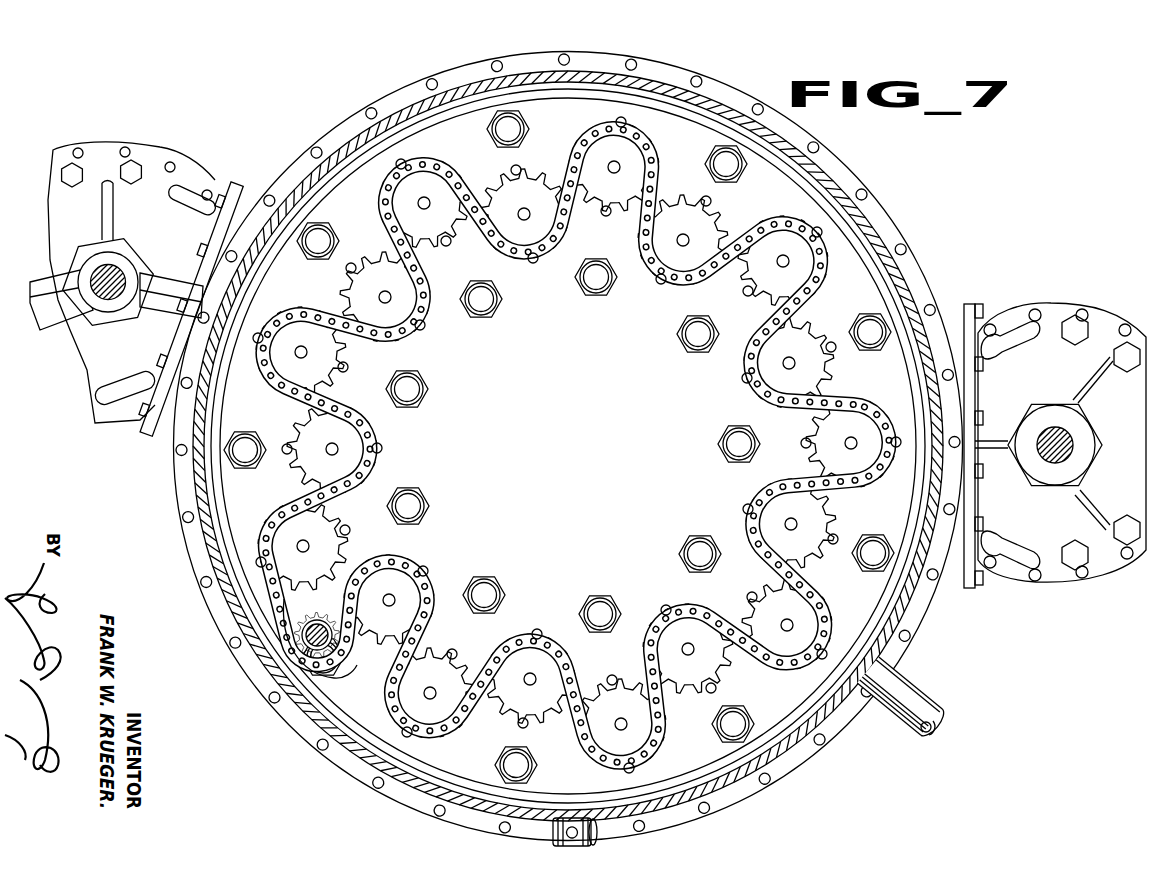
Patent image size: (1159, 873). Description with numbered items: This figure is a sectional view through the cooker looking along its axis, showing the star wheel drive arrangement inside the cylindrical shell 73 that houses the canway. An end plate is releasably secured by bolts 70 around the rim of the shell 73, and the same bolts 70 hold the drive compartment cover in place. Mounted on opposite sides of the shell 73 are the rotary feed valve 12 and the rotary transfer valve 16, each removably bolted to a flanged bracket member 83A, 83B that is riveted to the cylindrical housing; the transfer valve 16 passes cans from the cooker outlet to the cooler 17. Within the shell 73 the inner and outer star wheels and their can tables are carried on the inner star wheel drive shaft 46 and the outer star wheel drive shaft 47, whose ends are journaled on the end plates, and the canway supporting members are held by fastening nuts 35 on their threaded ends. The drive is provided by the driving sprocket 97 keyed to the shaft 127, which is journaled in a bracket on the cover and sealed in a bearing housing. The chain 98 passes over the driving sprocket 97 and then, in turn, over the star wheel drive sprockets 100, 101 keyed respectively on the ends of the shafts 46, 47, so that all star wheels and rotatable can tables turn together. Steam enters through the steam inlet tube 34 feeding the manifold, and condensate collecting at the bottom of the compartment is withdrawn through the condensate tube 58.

The rotary feed valve 12 is at (1028, 305).
The rotary transfer valve 16 is at (148, 120).
The cooler 17 is at (849, 171).
The steam inlet tube 34 is at (924, 700).
The fastening nut 35 is at (595, 295).
The inner star wheel drive shaft 46 is at (392, 591).
The outer star wheel drive shaft 47 is at (302, 539).
The condensate tube 58 is at (597, 830).
The bolts 70 is at (904, 249).
The cylindrical shell 73 is at (877, 237).
The bracket member 83A is at (957, 302).
The bracket member 83B is at (258, 183).
The driving sprocket 97 is at (316, 611).
The chain 98 is at (347, 634).
The star wheel drive sprocket 100 is at (536, 231).
The star wheel drive sprocket 101 is at (872, 329).
The shaft 127 is at (311, 637).